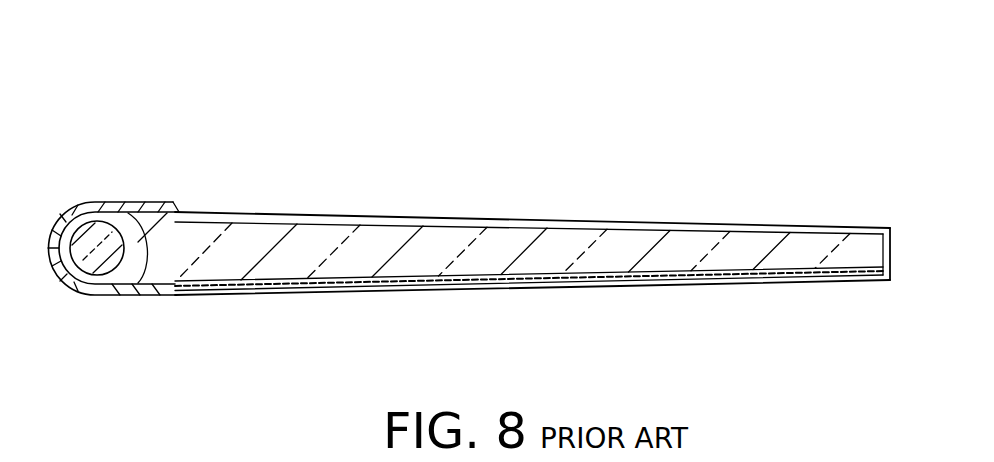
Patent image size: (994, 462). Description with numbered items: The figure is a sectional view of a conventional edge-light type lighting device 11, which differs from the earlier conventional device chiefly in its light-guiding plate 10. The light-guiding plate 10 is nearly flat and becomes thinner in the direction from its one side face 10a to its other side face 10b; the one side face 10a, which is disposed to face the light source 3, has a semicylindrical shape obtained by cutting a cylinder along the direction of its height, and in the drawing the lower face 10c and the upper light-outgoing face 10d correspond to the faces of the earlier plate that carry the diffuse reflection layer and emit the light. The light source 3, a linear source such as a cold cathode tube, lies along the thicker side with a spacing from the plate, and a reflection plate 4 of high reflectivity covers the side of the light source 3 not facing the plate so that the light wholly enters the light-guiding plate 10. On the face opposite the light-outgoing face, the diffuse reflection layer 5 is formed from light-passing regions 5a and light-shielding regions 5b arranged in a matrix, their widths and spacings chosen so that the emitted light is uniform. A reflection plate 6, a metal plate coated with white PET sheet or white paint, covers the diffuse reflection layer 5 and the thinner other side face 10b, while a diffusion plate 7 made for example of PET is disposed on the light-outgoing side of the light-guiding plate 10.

The light source 3 is at (85, 202).
The reflection plate 4 is at (112, 293).
The diffuse reflection layer 5 is at (270, 293).
The light-passing regions 5a is at (753, 280).
The light-shielding regions 5b is at (595, 285).
The reflection plate 6 is at (807, 278).
The diffusion plate 7 is at (612, 223).
The light-guiding plate 10 is at (503, 242).
The one side face 10a is at (127, 205).
The other side face 10b is at (885, 230).
The cover sheet bottom portion 10c is at (408, 295).
The cover sheet top portion 10d is at (397, 217).
The lighting device 11 is at (770, 193).